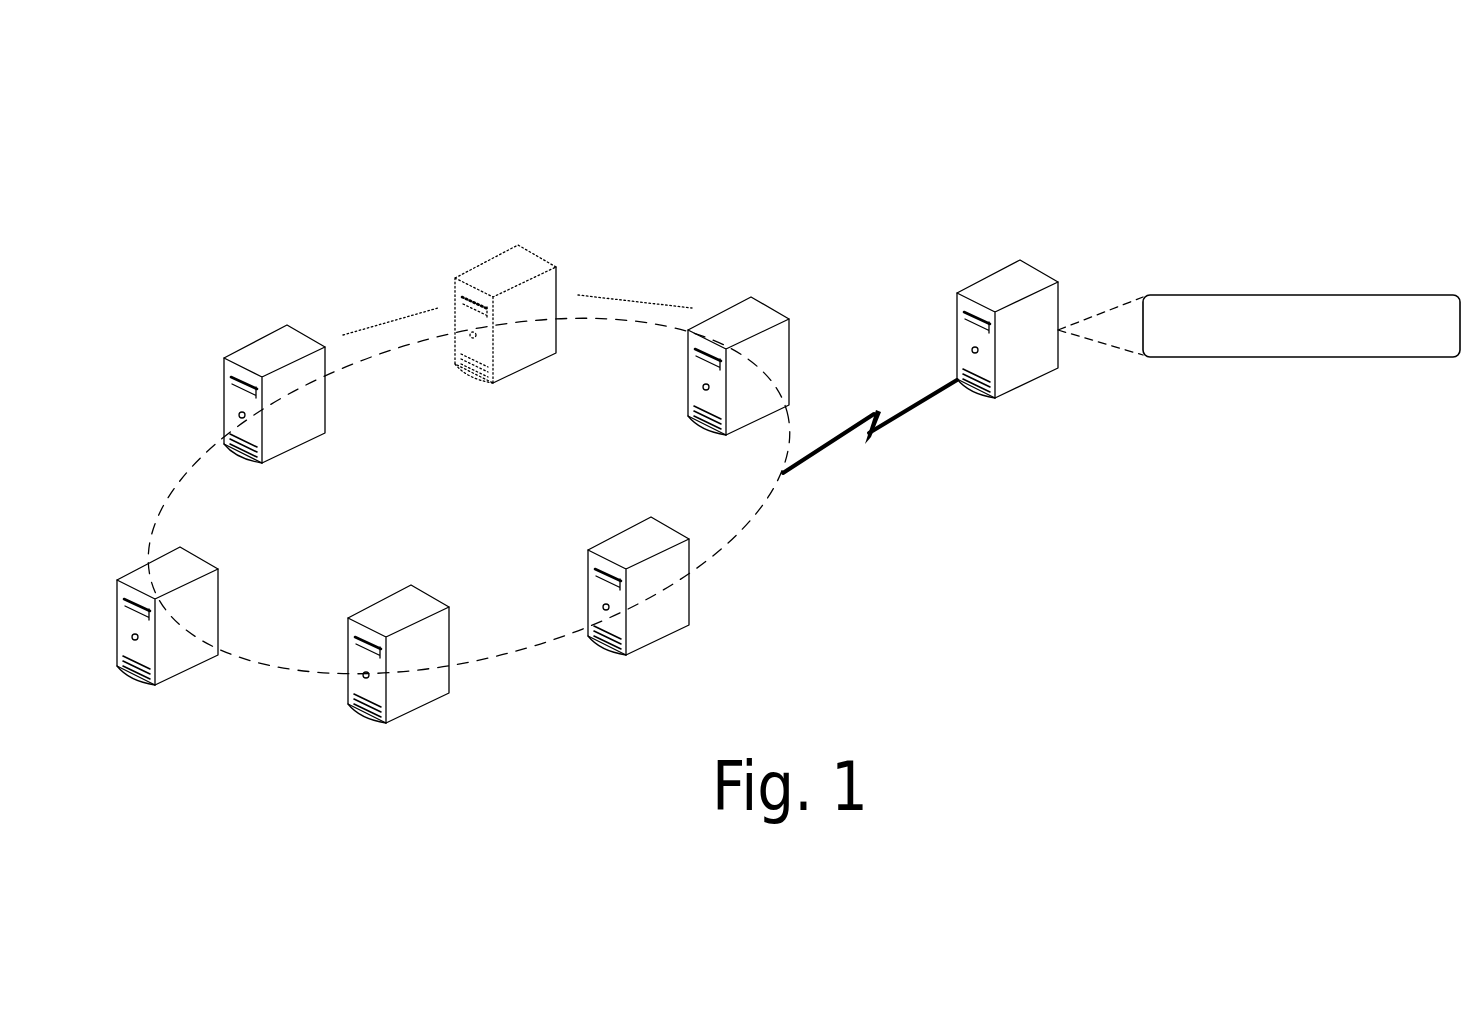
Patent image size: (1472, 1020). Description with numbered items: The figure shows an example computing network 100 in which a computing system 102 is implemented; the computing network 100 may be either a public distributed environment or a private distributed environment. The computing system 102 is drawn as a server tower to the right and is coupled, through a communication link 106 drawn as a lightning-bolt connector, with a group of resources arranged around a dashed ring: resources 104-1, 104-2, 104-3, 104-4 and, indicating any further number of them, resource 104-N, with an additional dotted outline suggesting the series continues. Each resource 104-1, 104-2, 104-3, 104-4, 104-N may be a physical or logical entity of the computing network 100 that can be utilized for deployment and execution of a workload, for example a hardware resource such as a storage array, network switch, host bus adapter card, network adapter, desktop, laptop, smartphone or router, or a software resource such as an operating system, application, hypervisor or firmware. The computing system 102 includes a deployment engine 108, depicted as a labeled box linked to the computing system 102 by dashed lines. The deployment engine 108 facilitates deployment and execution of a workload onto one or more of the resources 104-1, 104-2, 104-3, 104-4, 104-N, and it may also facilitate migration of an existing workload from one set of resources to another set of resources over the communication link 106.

The computing network 100 is at (1182, 86).
The computing system 102 is at (957, 293).
The resource 104-1 is at (651, 517).
The resource 104-2 is at (411, 585).
The resource 104-3 is at (155, 685).
The resource 104-4 is at (287, 325).
The resource 104-N is at (751, 297).
The communication link 106 is at (870, 426).
The deployment engine 108 is at (1428, 340).